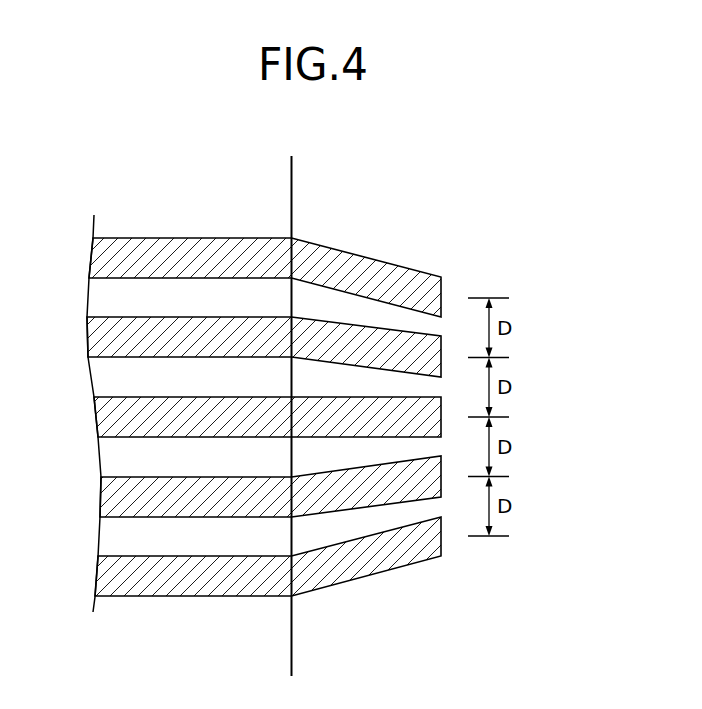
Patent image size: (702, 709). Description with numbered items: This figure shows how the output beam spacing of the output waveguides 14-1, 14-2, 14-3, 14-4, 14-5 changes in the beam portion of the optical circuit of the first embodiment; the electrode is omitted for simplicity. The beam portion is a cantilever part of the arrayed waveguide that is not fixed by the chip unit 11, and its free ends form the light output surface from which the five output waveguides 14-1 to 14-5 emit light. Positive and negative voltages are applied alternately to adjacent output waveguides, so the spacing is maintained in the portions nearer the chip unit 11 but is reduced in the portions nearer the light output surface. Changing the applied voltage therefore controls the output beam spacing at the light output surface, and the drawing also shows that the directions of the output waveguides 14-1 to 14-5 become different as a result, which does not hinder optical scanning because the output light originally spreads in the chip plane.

The chip unit 11 is at (292, 647).
The output waveguide 14-1 is at (208, 556).
The output waveguide 14-2 is at (208, 477).
The output waveguide 14-3 is at (208, 397).
The output waveguide 14-4 is at (208, 317).
The output waveguide 14-5 is at (208, 238).